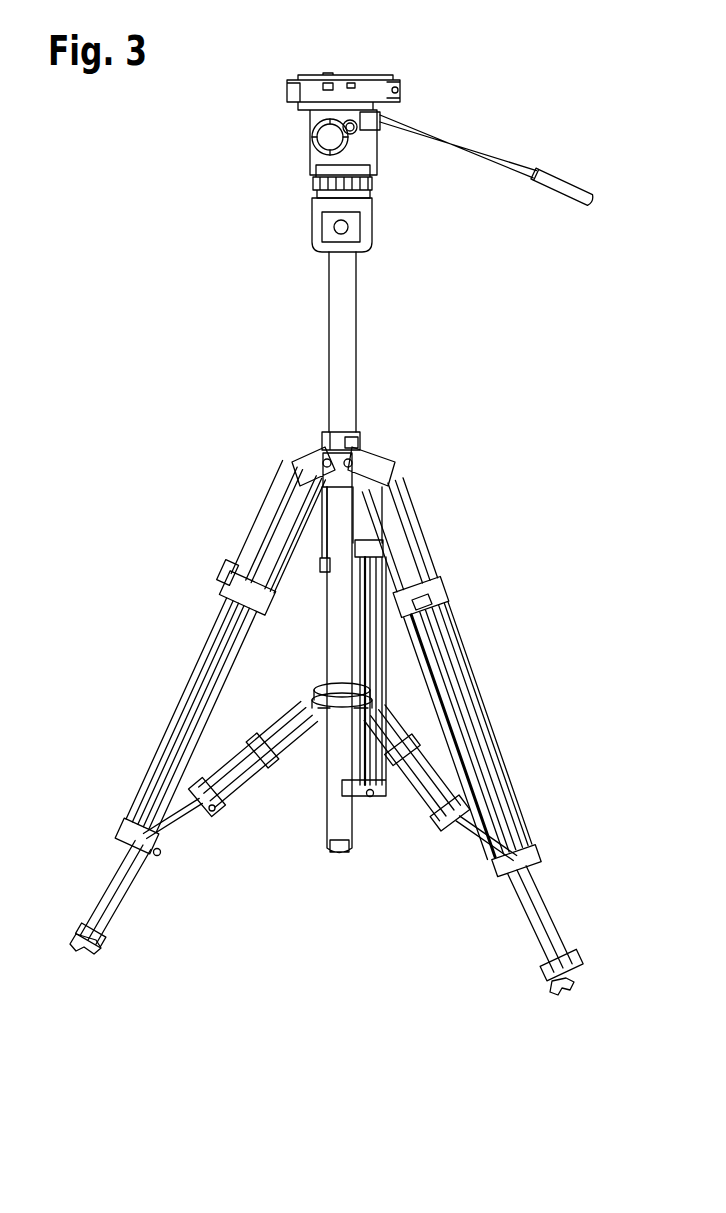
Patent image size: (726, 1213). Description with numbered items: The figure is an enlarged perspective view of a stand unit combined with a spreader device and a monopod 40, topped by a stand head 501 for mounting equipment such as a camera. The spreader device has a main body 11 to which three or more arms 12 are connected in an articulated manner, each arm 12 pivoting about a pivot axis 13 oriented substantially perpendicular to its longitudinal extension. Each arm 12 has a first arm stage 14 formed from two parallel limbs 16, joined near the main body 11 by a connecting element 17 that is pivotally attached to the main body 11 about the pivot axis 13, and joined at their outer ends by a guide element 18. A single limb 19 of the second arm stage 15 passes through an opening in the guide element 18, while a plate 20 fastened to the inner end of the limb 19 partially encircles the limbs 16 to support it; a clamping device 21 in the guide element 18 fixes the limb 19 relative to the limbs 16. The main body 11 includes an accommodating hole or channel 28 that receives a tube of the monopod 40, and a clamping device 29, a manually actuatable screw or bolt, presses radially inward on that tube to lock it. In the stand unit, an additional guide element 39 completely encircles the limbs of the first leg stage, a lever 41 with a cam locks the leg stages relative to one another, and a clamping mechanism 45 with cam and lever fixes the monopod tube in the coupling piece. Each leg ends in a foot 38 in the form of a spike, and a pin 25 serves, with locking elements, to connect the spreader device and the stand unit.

The stand head 501 is at (414, 72).
The monopod 40 is at (365, 364).
The additional guide element 39 is at (362, 447).
The clamping mechanism 45 is at (312, 465).
The accommodating hole or channel 28 is at (318, 668).
The lever 41 is at (437, 610).
The main body 11 is at (312, 686).
The pivot axis 13 is at (310, 690).
The connecting element 17 is at (372, 692).
The first arm stage 14 is at (400, 738).
The limbs 16 is at (283, 728).
The arm 12 is at (258, 793).
The guide element 18 is at (203, 792).
The plate 20 is at (275, 757).
The clamping device 21 is at (213, 812).
The pin 25 is at (160, 855).
The clamping device 29 is at (366, 797).
The limb 19 is at (470, 830).
The second arm stage 15 is at (468, 845).
The foot 38 is at (572, 992).